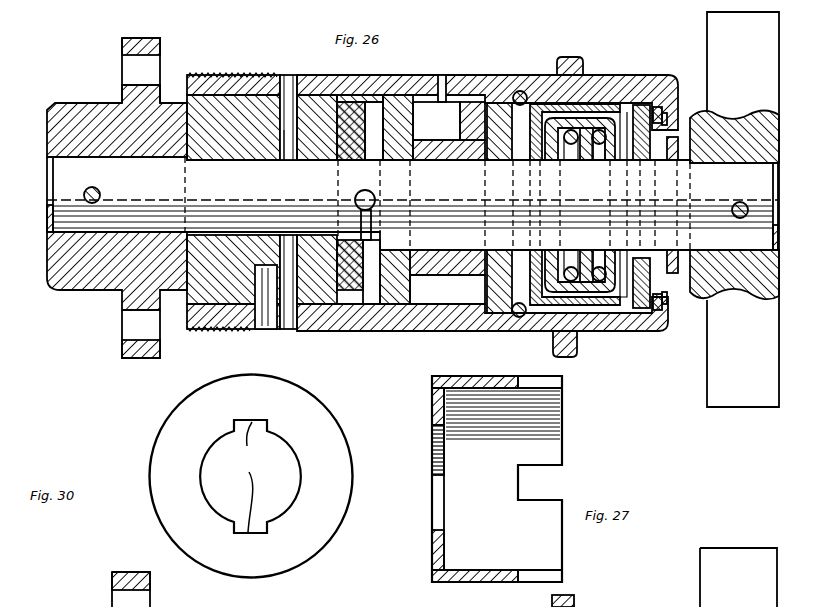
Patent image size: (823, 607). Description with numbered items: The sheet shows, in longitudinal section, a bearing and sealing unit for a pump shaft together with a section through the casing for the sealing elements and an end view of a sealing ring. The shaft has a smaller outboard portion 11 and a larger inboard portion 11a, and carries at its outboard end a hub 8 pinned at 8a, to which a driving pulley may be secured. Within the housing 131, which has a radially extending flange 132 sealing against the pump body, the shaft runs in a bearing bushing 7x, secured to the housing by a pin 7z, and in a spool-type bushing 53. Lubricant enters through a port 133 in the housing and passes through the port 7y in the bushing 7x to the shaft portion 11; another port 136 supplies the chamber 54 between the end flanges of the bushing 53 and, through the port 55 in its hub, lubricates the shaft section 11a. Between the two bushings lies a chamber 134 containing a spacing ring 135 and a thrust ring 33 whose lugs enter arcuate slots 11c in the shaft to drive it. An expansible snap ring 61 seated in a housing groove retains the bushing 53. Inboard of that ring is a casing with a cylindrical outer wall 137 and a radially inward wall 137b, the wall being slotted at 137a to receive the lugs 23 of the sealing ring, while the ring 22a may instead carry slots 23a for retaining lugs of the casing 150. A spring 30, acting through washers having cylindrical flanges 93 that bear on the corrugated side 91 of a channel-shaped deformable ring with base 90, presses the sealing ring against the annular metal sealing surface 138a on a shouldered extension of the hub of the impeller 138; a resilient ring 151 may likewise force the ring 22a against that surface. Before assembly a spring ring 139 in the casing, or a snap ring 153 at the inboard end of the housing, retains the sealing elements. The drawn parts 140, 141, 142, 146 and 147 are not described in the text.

In FIG. 26, the hub 8 is at (85, 283).
In FIG. 26, the pin 8a is at (100, 191).
In FIG. 26, the shaft outboard portion 11 is at (412, 203).
In FIG. 26, the shaft inboard portion 11a is at (426, 205).
In FIG. 26, the arcuate slots 11c is at (354, 200).
In FIG. 26, the bearing bushing 7x is at (210, 288).
In FIG. 26, the port 7y is at (290, 160).
In FIG. 26, the pin 7z is at (264, 330).
In FIG. 26, the port 133 is at (292, 75).
In FIG. 26, the housing 131 is at (437, 328).
In FIG. 26, the radially extending flange 132 is at (568, 58).
In FIG. 26, the port 136 is at (443, 80).
In FIG. 26, the thrust ring 33 is at (357, 100).
In FIG. 26, the chamber 134 is at (370, 288).
In FIG. 26, the spacing ring 135 is at (362, 304).
In FIG. 26, the port 55 is at (446, 152).
In FIG. 26, the spool-type bushing 53 is at (460, 262).
In FIG. 26, the chamber 54 is at (473, 105).
In FIG. 26, the expansible snap ring 61 is at (520, 90).
In FIG. 26, the base of the channel 90 is at (590, 304).
In FIG. 26, the cylindrical outer wall 137 is at (595, 102).
In FIG. 27, the cylindrical outer wall 137 is at (492, 376).
In FIG. 26, the slot 137a is at (625, 105).
In FIG. 27, the slot 137a is at (540, 485).
In FIG. 26, the radially inwardly extending wall 137b is at (535, 150).
In FIG. 27, the radially inwardly extending wall 137b is at (430, 422).
In FIG. 26, the cylindrical flange 93 is at (612, 293).
In FIG. 26, the radially inwardly extending side 91 is at (545, 276).
In FIG. 26, the spring 30 is at (585, 162).
In FIG. 26, the driving projections 23 is at (640, 105).
In FIG. 30, the slots 23a is at (250, 476).
In FIG. 26, the spring ring 139 is at (661, 107).
In FIG. 26, the sealing ring 22a is at (648, 165).
In FIG. 30, the sealing ring 22a is at (333, 494).
In FIG. 27, the sealing ring 22a is at (650, 606).
In FIG. 26, the annular metal sealing surface 138a is at (655, 142).
In FIG. 26, the rotor or impeller 138 is at (733, 302).
In FIG. 30, the member 141 is at (265, 606).
In FIG. 30, the member 142 is at (290, 606).
In FIG. 30, the member 140 is at (346, 606).
In FIG. 27, the member 146 is at (402, 606).
In FIG. 27, the member 147 is at (514, 597).
In FIG. 27, the casing 150 is at (587, 606).
In FIG. 27, the ring 151 is at (620, 606).
In FIG. 27, the outwardly expansible snap ring 153 is at (680, 606).